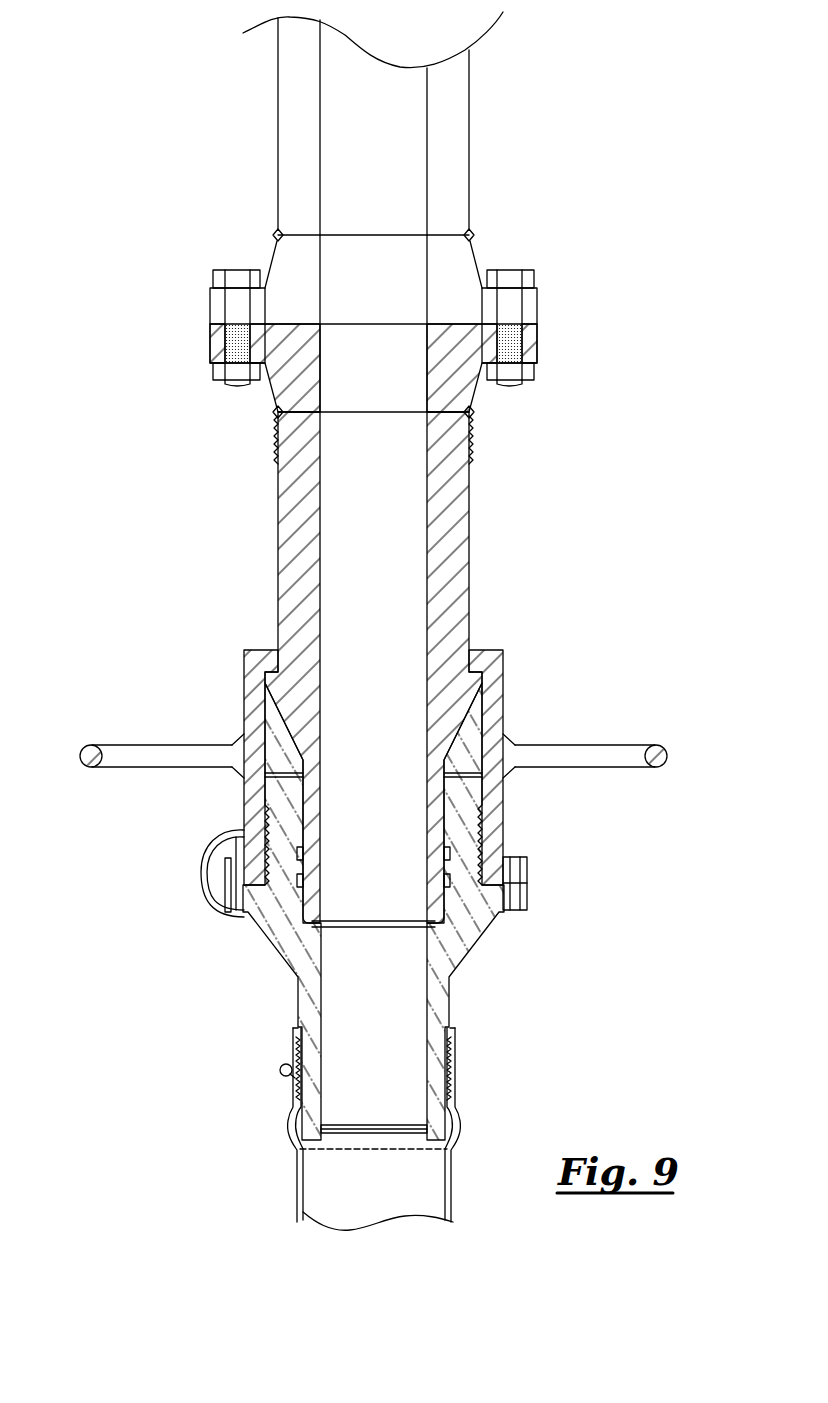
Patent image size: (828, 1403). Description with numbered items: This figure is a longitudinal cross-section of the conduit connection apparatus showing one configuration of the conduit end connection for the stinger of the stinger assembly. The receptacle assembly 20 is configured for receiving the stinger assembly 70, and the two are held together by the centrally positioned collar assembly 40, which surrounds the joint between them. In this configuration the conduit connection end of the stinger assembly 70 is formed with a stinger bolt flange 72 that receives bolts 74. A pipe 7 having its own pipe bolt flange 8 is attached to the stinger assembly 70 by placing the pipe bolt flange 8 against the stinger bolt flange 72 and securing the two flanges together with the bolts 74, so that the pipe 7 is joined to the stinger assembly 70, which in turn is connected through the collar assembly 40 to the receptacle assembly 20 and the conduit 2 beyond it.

The hose 2 is at (293, 1168).
The pipe 7 is at (452, 143).
The pipe bolt flange 8 is at (533, 298).
The receptacle assembly 20 is at (484, 968).
The collar assembly 40 is at (208, 696).
The stinger assembly 70 is at (482, 506).
The stinger bolt flange 72 is at (465, 370).
The bolts 74 is at (235, 270).